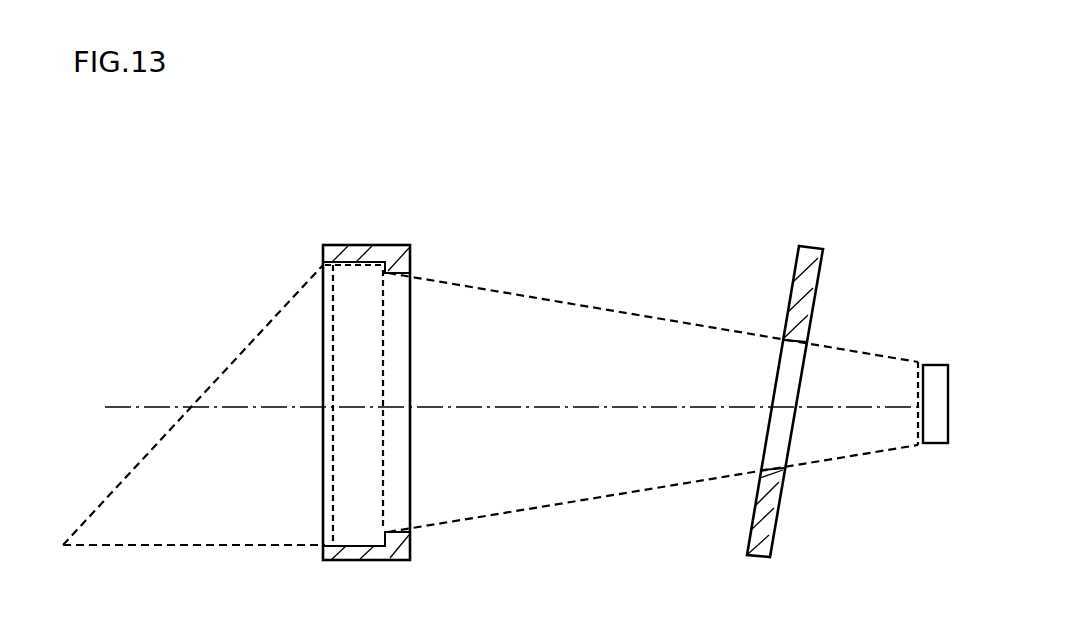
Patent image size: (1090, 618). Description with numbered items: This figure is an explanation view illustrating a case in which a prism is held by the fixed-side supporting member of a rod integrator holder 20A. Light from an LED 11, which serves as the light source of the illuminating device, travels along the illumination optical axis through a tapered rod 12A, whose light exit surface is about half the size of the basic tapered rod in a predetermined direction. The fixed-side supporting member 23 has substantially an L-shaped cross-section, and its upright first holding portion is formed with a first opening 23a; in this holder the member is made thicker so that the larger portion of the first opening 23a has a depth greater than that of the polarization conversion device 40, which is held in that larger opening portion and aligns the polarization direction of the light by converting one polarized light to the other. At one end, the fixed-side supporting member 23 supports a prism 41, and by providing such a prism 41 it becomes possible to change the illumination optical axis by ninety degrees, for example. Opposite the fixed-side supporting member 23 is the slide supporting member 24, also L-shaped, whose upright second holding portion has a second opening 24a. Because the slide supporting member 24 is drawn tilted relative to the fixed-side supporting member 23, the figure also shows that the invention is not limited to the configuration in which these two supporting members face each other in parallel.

The LED 11 is at (938, 375).
The tapered rod 12A is at (548, 290).
The rod integrator holder 20A is at (540, 190).
The fixed-side supporting member 23 is at (388, 270).
The first opening 23a is at (422, 281).
The slide supporting member 24 is at (803, 260).
The second opening 24a is at (838, 348).
The polarization conversion device 40 is at (347, 243).
The prism 41 is at (282, 330).